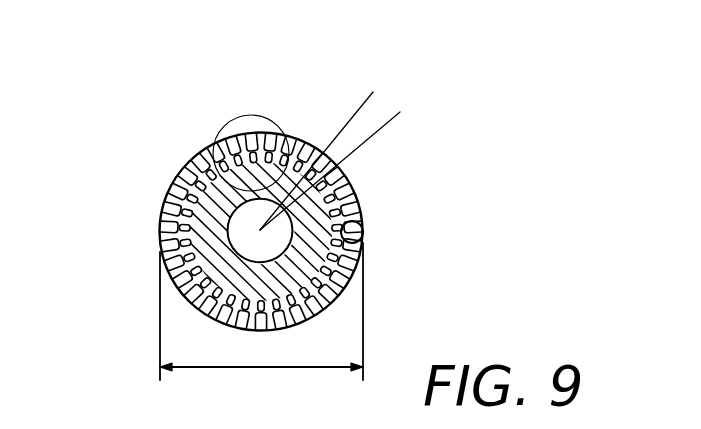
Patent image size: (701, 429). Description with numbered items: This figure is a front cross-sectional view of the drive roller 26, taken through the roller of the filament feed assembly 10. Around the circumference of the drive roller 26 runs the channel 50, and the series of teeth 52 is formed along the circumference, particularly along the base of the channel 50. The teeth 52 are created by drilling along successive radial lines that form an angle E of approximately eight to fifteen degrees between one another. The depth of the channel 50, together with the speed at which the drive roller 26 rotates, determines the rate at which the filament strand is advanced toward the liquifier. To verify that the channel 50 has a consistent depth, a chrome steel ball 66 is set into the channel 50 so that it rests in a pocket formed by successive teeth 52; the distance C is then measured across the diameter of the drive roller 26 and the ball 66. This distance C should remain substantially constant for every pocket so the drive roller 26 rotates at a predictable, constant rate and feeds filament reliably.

The rotor/stator assembly region 10 is at (267, 118).
The drive roller 26 is at (182, 163).
The channel 50 is at (355, 180).
The series of teeth 52 is at (324, 283).
The chrome steel ball 66 is at (363, 227).
The angle E is at (415, 133).
The distance C is at (261, 321).